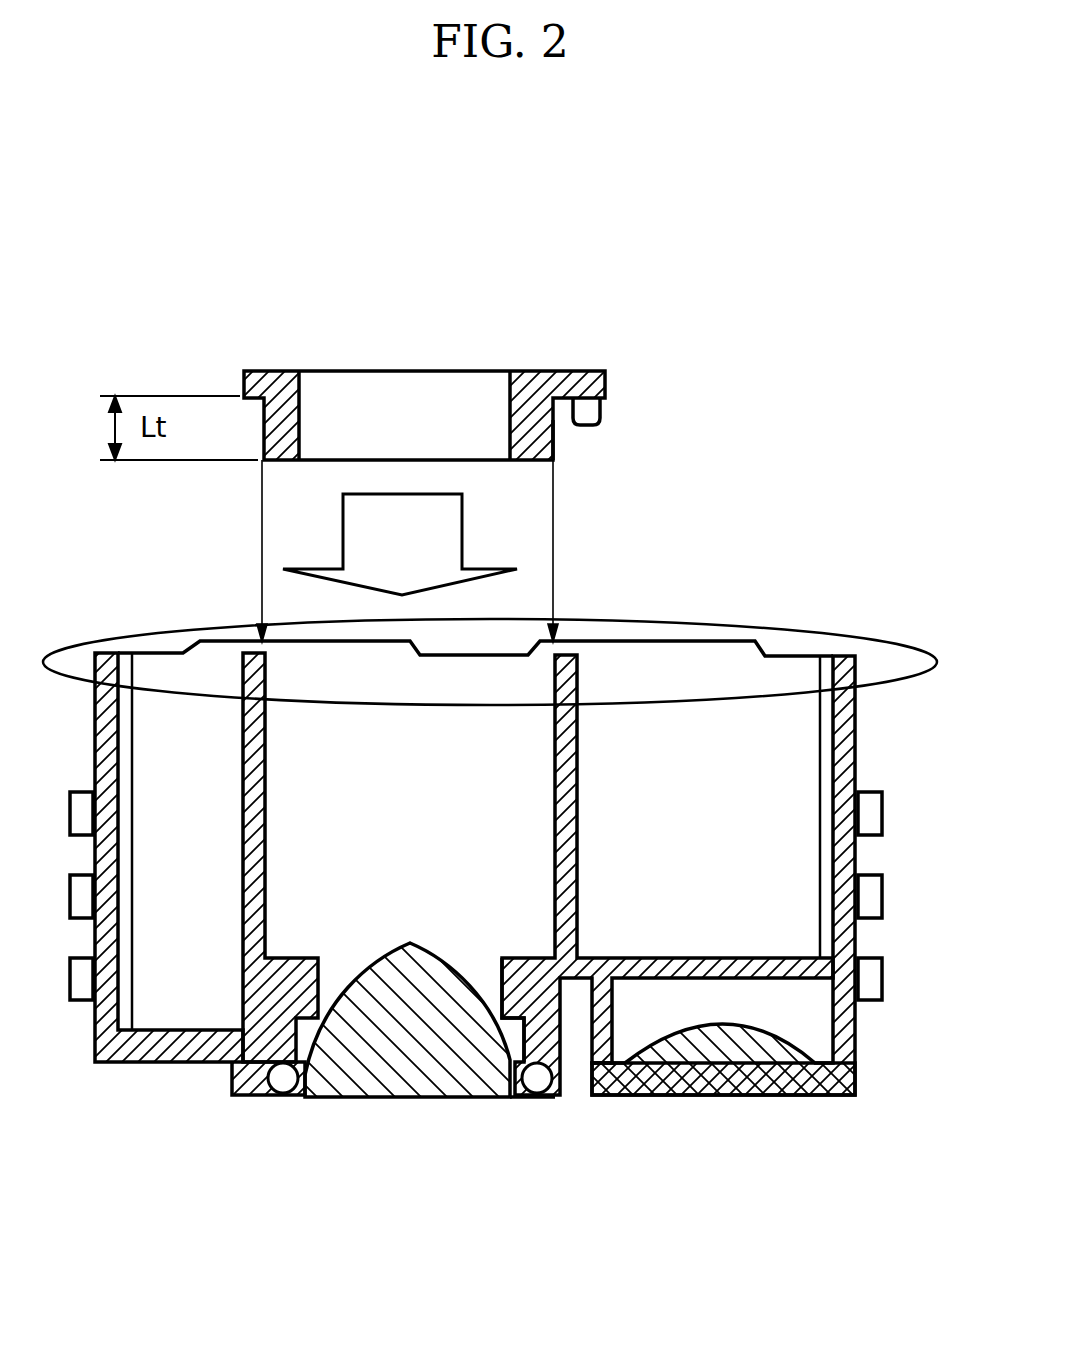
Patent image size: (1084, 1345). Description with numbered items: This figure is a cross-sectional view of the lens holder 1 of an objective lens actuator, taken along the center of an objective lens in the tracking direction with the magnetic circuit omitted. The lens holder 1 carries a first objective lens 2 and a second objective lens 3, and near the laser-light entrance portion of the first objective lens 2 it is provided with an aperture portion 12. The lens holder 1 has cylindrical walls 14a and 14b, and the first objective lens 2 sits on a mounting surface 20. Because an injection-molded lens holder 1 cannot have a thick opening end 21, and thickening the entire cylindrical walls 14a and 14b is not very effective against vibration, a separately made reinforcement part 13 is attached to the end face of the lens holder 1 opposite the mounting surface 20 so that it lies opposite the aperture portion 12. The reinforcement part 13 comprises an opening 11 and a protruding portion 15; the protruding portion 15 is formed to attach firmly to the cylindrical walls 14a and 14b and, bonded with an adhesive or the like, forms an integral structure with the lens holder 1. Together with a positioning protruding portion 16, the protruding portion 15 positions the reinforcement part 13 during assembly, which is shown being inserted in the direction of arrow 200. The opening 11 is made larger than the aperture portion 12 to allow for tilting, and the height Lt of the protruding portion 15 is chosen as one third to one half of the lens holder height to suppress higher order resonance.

The lens holder 1 is at (865, 795).
The first objective lens 2 is at (460, 1100).
The second objective lens 3 is at (690, 1078).
The opening 11 is at (350, 398).
The aperture portion 12 is at (410, 1082).
The reinforcement part 13 is at (525, 400).
The cylindrical wall 14a is at (577, 735).
The cylindrical wall 14b is at (243, 680).
The protruding portion 15 is at (556, 440).
The positioning protruding portion 16 is at (600, 420).
The mounting surface 20 is at (520, 1085).
The opening end 21 is at (805, 632).
The insertion direction 200 is at (400, 544).